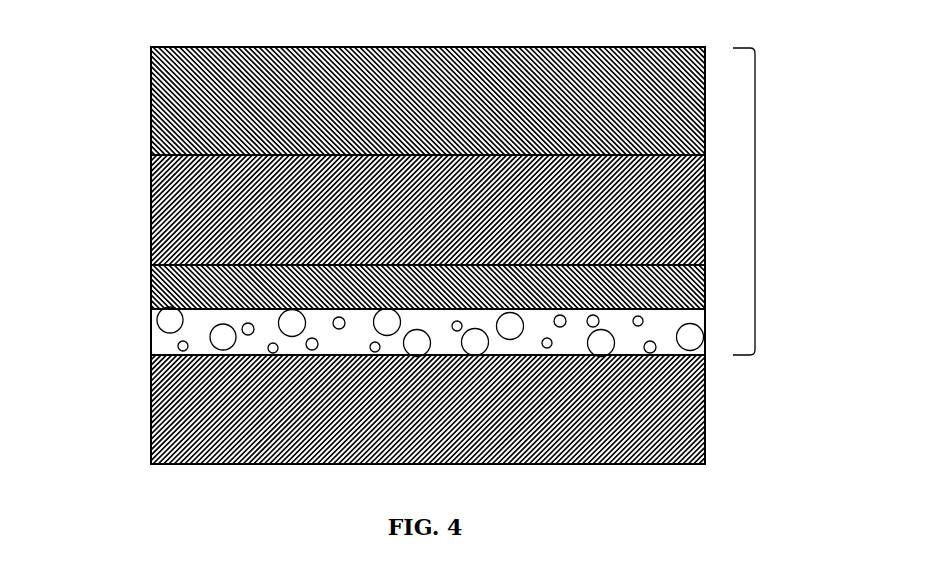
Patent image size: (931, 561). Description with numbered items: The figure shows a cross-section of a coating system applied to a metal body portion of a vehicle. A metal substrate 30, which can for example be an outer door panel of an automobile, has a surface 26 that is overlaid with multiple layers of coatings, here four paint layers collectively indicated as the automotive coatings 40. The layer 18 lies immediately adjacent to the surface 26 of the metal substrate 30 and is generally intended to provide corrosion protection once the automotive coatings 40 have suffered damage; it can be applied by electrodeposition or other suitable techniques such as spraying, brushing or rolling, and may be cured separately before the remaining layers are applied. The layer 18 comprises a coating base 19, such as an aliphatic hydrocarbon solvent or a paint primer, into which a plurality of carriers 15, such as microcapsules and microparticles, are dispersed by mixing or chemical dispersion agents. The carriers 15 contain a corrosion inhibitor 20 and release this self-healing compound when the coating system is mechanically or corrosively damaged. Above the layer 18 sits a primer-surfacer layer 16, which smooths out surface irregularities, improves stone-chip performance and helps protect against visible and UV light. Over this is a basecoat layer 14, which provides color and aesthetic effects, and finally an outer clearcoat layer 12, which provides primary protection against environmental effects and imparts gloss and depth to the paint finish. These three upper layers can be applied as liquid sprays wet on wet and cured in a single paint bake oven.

The clearcoat layer 12 is at (160, 104).
The basecoat layer 14 is at (166, 206).
The primer-surfacer layer 16 is at (161, 288).
The corrosion-protection layer 18 is at (442, 377).
The coating base 19 is at (660, 325).
The carriers 15 is at (209, 349).
The corrosion inhibitor 20 is at (655, 350).
The surface 26 is at (527, 355).
The metal substrate 30 is at (693, 412).
The automotive coatings 40 is at (757, 202).